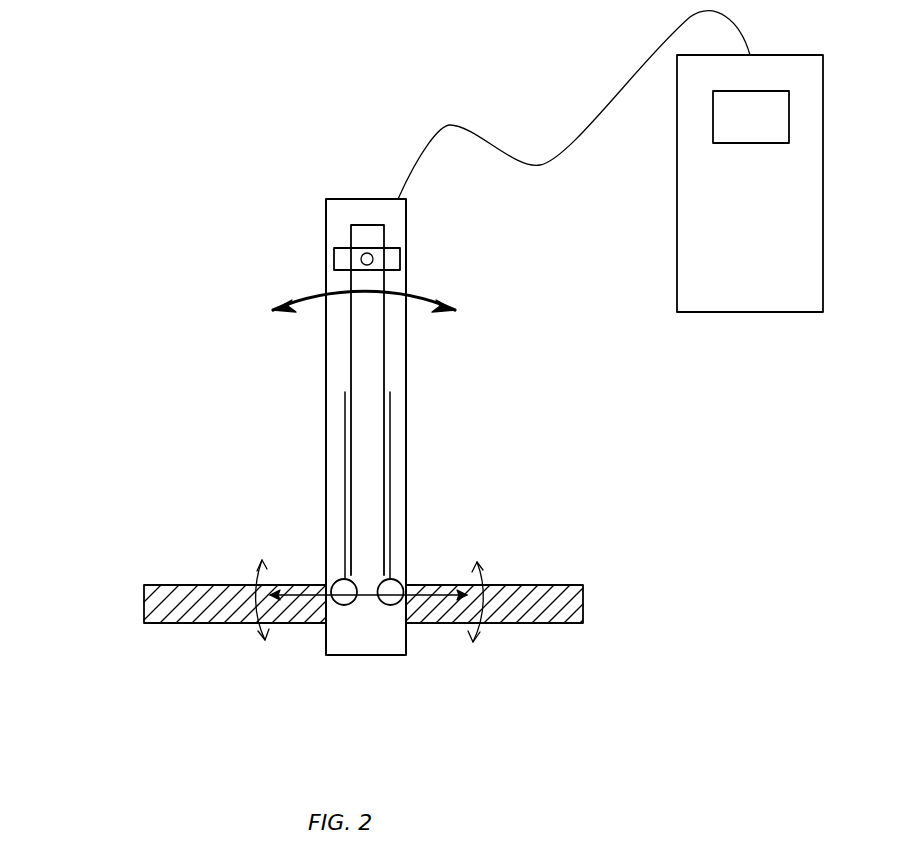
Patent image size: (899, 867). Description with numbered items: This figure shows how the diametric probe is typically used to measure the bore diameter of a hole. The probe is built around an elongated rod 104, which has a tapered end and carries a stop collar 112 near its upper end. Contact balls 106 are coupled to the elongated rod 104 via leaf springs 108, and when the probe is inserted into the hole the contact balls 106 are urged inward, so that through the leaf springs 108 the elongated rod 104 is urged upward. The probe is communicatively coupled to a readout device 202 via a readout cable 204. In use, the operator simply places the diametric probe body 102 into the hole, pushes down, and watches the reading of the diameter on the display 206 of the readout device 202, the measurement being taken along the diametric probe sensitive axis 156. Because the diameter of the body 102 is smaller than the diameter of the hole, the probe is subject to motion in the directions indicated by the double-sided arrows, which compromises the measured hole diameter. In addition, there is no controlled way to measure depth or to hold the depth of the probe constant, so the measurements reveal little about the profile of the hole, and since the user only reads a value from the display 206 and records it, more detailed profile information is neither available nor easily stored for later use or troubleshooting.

The diametric probe body 102 is at (406, 402).
The elongated rod 104 is at (358, 332).
The contact balls 106 is at (335, 583).
The leaf springs 108 is at (345, 497).
The stop collar 112 is at (338, 258).
The diametric probe sensitive axis 156 is at (303, 623).
The readout device 202 is at (748, 312).
The readout cable 204 is at (548, 166).
The display 206 is at (789, 125).